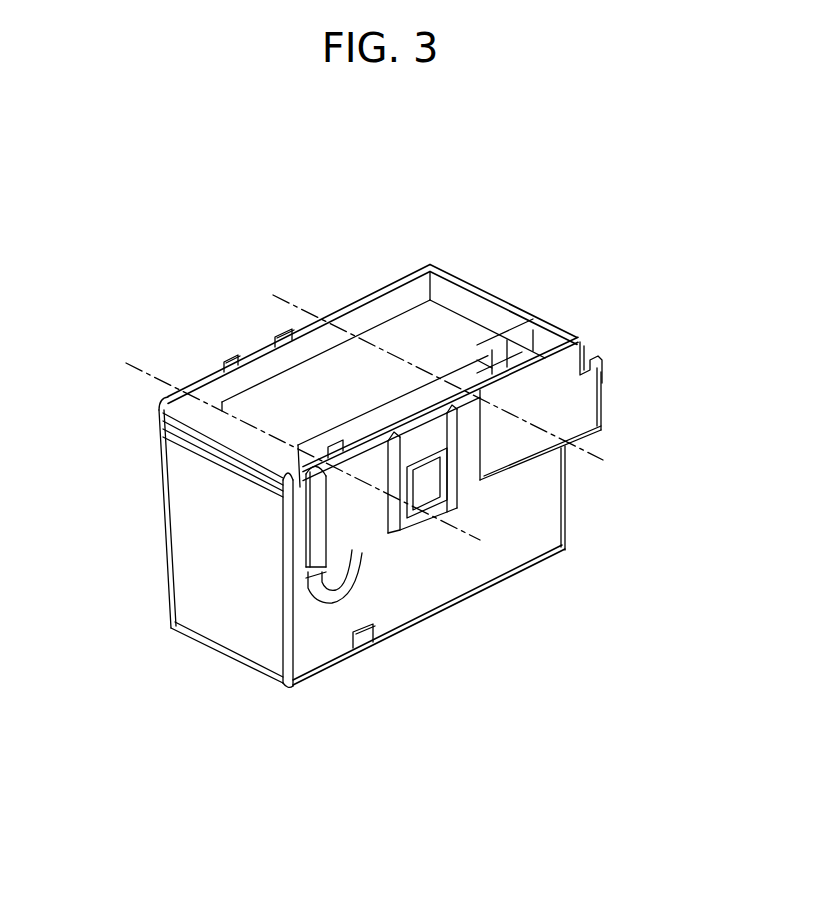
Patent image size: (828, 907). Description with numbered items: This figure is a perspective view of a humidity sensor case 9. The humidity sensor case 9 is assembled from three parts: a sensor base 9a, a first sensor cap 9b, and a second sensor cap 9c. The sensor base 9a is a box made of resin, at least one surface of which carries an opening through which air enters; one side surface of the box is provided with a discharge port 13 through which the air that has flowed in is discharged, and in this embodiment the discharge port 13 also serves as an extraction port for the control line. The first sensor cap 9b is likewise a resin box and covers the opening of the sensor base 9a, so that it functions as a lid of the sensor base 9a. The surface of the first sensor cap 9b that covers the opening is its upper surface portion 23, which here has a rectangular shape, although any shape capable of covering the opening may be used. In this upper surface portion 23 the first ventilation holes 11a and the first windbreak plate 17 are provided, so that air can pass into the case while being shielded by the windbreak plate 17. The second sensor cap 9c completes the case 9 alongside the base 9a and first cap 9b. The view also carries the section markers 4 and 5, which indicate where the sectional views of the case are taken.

The humidity sensor case 9 is at (143, 272).
The first windbreak plate 17 is at (275, 408).
The first ventilation holes 11a is at (477, 380).
The upper surface portion 23 is at (467, 318).
The second sensor cap 9c is at (493, 370).
The sensor base 9a is at (393, 613).
The first sensor cap 9b is at (583, 415).
The discharge port 13 is at (327, 567).
The section line IV-IV 4 is at (273, 295).
The section line V-V 5 is at (126, 364).